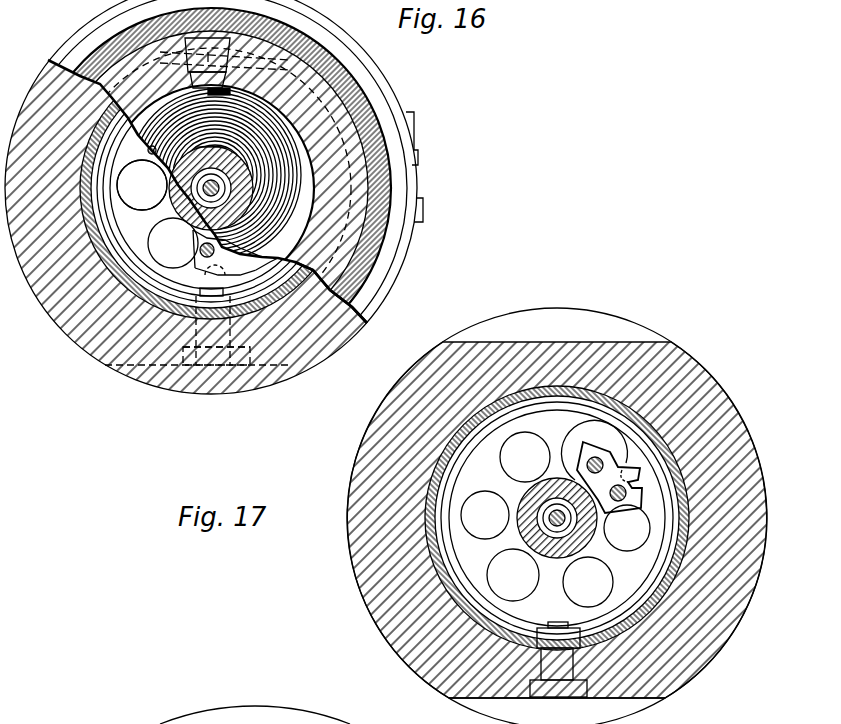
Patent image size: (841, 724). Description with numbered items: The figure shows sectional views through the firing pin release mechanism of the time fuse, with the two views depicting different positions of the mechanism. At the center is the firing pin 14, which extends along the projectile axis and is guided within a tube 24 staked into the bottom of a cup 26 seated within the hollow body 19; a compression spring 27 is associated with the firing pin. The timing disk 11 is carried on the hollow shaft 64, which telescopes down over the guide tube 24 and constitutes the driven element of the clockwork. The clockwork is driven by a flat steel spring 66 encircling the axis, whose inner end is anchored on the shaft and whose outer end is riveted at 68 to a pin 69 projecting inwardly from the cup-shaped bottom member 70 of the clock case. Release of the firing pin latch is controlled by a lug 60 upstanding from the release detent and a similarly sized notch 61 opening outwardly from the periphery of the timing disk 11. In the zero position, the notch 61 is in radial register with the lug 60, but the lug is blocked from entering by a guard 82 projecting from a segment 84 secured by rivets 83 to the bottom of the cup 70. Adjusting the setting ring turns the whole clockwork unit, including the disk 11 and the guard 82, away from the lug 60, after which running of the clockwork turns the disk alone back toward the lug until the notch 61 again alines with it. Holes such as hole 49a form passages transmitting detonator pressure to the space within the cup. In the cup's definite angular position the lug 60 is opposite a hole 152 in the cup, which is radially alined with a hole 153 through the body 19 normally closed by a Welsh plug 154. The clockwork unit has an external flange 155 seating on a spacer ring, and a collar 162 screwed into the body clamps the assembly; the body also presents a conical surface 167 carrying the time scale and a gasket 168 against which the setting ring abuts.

In FIG. 16, the timing disk 11 is at (118, 213).
In FIG. 17, the timing disk 11 is at (460, 550).
In FIG. 16, the firing pin 14 is at (182, 200).
In FIG. 17, the firing pin 14 is at (578, 531).
In FIG. 16, the body 19 is at (52, 312).
In FIG. 17, the body 19 is at (362, 570).
In FIG. 16, the tube 24 is at (202, 186).
In FIG. 17, the tube 24 is at (545, 518).
In FIG. 16, the cup 26 is at (88, 158).
In FIG. 17, the cup 26 is at (428, 516).
In FIG. 16, the compression spring 27 is at (206, 219).
In FIG. 17, the hole 49a is at (506, 470).
In FIG. 16, the lug 60 is at (234, 306).
In FIG. 17, the lug 60 is at (558, 635).
In FIG. 16, the notch 61 is at (212, 273).
In FIG. 17, the notch 61 is at (640, 482).
In FIG. 16, the hollow shaft 64 is at (176, 174).
In FIG. 17, the hollow shaft 64 is at (540, 562).
In FIG. 16, the spring 66 is at (148, 150).
In FIG. 16, the rivet 68 is at (230, 90).
In FIG. 16, the pin 69 is at (220, 72).
In FIG. 16, the cup-shaped bottom member 70 is at (124, 93).
In FIG. 16, the guard 82 is at (258, 282).
In FIG. 17, the guard 82 is at (646, 450).
In FIG. 16, the rivets 83 is at (200, 251).
In FIG. 16, the segment 84 is at (206, 246).
In FIG. 17, the segment 84 is at (636, 494).
In FIG. 16, the hole 152 is at (196, 312).
In FIG. 17, the hole 152 is at (541, 650).
In FIG. 16, the hole 153 is at (236, 348).
In FIG. 17, the hole 153 is at (590, 672).
In FIG. 16, the Welsh plug 154 is at (262, 367).
In FIG. 17, the Welsh plug 154 is at (574, 692).
In FIG. 16, the external flange 155 is at (348, 302).
In FIG. 16, the collar 162 is at (372, 192).
In FIG. 16, the conical surface 167 is at (398, 98).
In FIG. 16, the gasket 168 is at (395, 175).